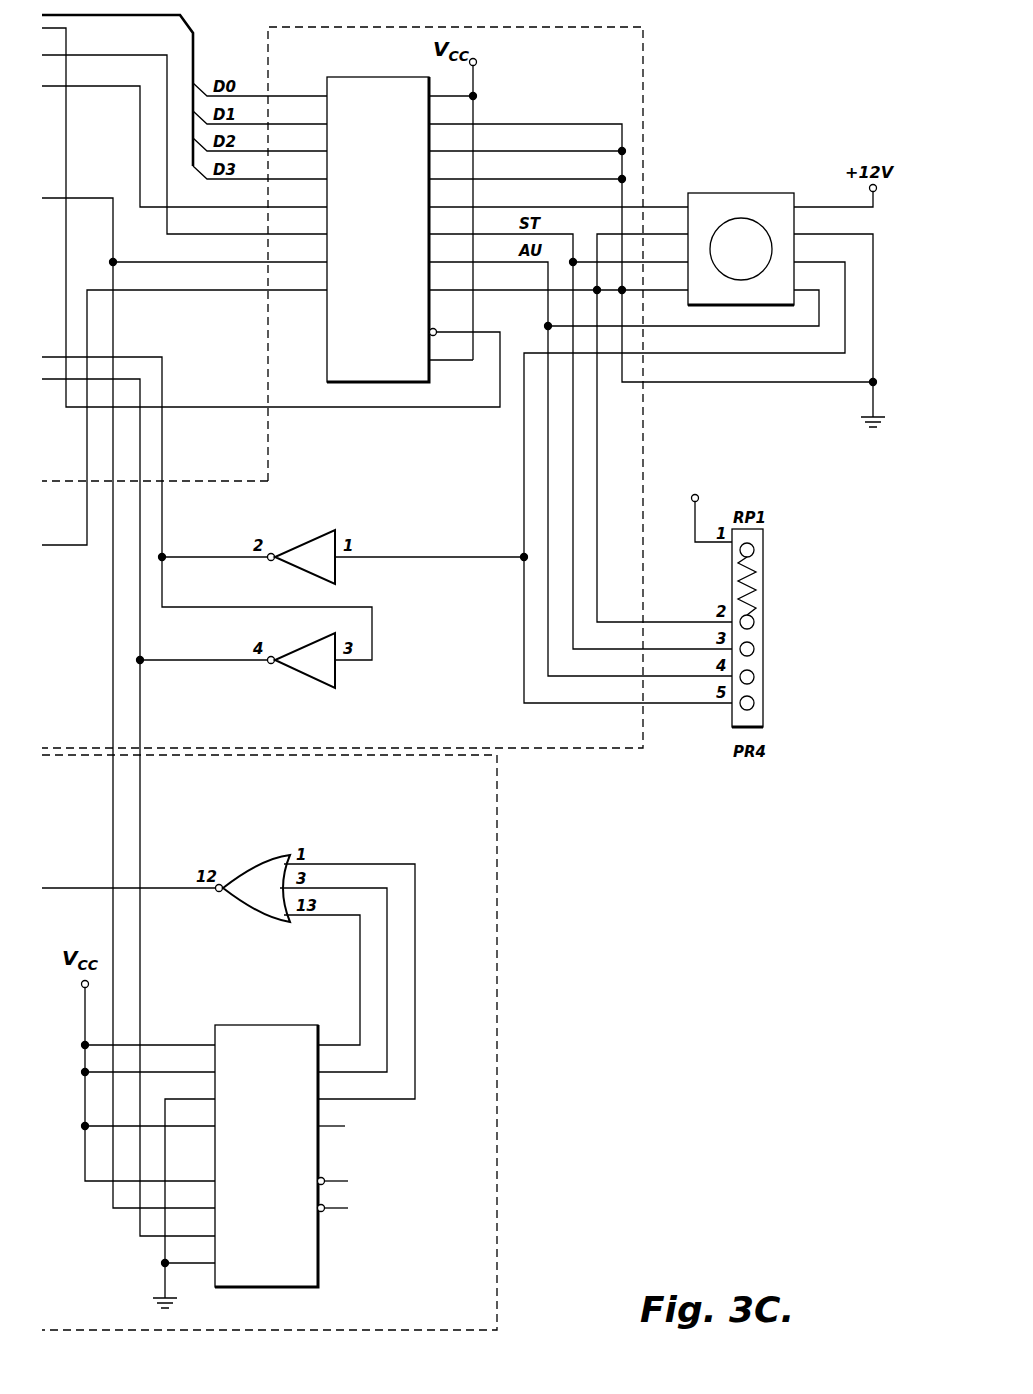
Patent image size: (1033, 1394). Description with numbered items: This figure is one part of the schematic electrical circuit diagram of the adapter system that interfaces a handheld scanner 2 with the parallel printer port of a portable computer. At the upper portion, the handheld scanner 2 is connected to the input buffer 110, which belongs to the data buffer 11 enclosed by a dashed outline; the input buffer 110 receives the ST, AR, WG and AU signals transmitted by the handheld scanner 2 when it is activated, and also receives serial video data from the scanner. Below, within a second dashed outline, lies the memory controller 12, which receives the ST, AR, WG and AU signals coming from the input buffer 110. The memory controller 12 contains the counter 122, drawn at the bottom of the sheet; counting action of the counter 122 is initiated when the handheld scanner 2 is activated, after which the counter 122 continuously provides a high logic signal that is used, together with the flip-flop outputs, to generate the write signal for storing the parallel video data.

The handheld scanner 2 is at (728, 182).
The data buffer 11 is at (607, 90).
The memory controller 12 is at (480, 966).
The input buffer 110 is at (363, 79).
The counter 122 is at (297, 1262).